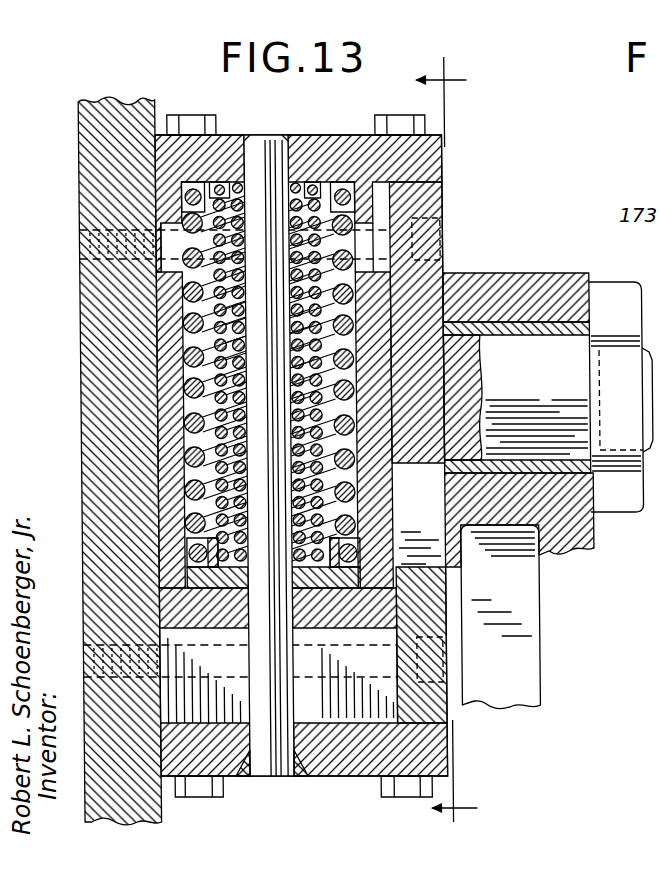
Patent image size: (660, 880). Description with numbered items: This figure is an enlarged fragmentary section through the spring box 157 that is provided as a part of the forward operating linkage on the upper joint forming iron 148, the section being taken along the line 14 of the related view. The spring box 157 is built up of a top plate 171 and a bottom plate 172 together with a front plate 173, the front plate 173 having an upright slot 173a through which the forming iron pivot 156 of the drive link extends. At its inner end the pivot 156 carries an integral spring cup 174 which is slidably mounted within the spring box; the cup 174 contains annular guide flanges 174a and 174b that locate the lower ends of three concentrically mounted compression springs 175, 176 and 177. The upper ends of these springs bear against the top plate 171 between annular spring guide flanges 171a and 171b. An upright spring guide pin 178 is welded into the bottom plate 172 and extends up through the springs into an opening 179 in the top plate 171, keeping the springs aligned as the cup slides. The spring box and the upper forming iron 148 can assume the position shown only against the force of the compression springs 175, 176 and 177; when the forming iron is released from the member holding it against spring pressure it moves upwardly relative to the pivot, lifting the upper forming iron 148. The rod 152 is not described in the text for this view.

The section line 14- 14 is at (461, 439).
The upper joint forming iron 148 is at (85, 118).
The rod 152 is at (501, 692).
The forming iron pivot 156 is at (499, 350).
The spring box 157 is at (450, 158).
The top plate 171 is at (321, 135).
The annular spring guide flange 171a is at (160, 203).
The annular spring guide flange 171b is at (233, 182).
The bottom plate 172 is at (340, 768).
The front plate 173 is at (445, 202).
The upright slot 173a is at (436, 553).
The spring cup 174 is at (178, 610).
The annular guide flange 174a is at (206, 535).
The annular guide flange 174b is at (239, 575).
The compression spring 175 is at (185, 372).
The compression spring 176 is at (187, 410).
The compression spring 177 is at (183, 425).
The upright spring guide pin 178 is at (267, 767).
The opening 179 is at (285, 135).